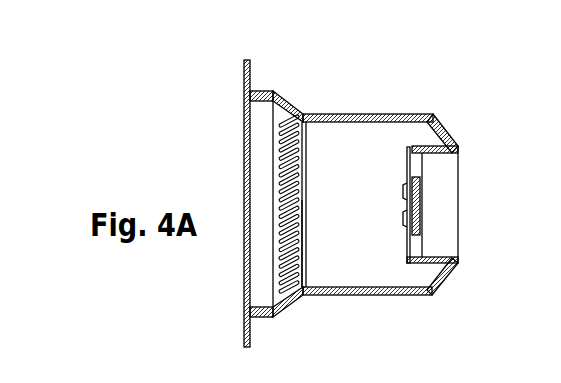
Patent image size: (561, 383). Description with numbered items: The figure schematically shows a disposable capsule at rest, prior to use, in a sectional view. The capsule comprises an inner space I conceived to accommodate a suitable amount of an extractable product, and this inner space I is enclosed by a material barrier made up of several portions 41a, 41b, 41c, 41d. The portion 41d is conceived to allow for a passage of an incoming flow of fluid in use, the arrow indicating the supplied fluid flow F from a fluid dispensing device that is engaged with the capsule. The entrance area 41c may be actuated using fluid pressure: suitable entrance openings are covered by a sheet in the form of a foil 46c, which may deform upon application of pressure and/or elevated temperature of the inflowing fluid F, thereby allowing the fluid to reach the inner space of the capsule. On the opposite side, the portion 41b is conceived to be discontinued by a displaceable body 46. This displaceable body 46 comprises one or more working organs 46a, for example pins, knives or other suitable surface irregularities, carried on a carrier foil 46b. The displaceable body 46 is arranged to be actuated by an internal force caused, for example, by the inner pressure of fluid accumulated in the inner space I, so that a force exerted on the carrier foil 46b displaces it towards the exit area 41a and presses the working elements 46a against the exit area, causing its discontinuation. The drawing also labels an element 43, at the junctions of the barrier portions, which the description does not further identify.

The material barrier portion 41a is at (343, 114).
The material barrier portion 41b is at (245, 160).
The entrance area 41c is at (332, 296).
The material barrier portion 41d is at (417, 178).
The connecting portion 43 is at (303, 112).
The displaceable body 46 is at (279, 204).
The working organs 46a is at (302, 205).
The carrier foil 46b is at (302, 257).
The foil 46c is at (407, 167).
The fluid flow F is at (428, 205).
The inner space I is at (382, 270).